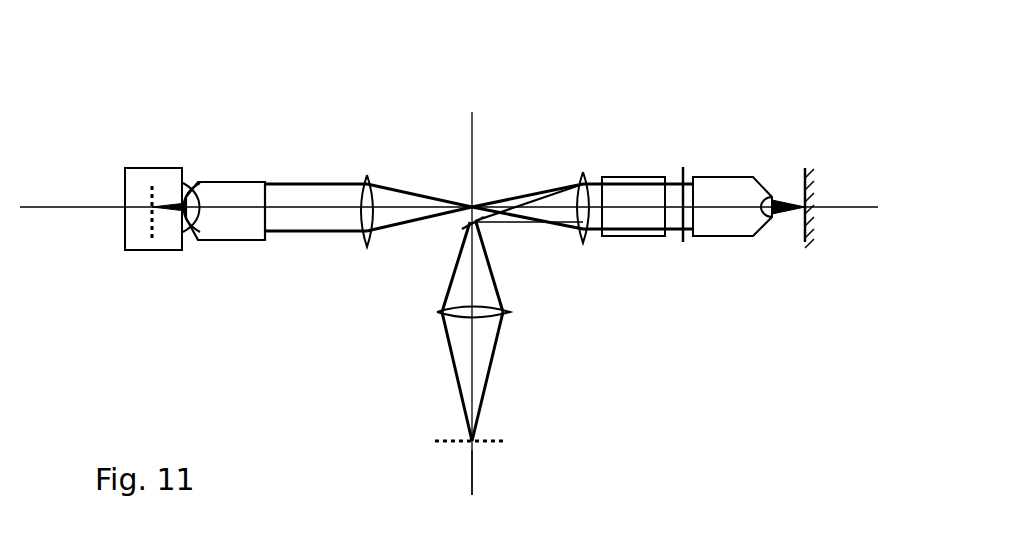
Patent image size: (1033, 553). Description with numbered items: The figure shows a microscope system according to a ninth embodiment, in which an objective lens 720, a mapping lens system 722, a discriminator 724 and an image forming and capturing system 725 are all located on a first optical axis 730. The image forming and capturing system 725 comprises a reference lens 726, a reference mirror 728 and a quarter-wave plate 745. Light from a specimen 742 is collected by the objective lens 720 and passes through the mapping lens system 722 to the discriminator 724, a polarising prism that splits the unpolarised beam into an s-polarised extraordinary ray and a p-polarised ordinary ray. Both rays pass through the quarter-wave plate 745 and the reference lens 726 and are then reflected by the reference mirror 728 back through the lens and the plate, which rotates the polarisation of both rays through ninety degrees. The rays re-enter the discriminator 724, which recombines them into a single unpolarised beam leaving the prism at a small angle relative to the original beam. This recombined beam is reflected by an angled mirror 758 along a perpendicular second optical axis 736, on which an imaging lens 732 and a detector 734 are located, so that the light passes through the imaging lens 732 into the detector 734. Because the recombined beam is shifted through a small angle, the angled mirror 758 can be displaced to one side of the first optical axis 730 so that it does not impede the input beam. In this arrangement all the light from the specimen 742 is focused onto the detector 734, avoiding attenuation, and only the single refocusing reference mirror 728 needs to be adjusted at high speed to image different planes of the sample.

The objective lens 720 is at (231, 188).
The mapping lens system 722 is at (367, 178).
The discriminator 724 is at (635, 176).
The image forming and capturing system 725 is at (797, 118).
The reference lens 726 is at (732, 227).
The reference mirror 728 is at (812, 240).
The first optical axis 730 is at (303, 207).
The imaging lens 732 is at (437, 316).
The detector 734 is at (452, 443).
The second optical axis 736 is at (473, 487).
The specimen 742 is at (137, 243).
The quarter-wave plate 745 is at (684, 166).
The angled mirror 758 is at (460, 231).